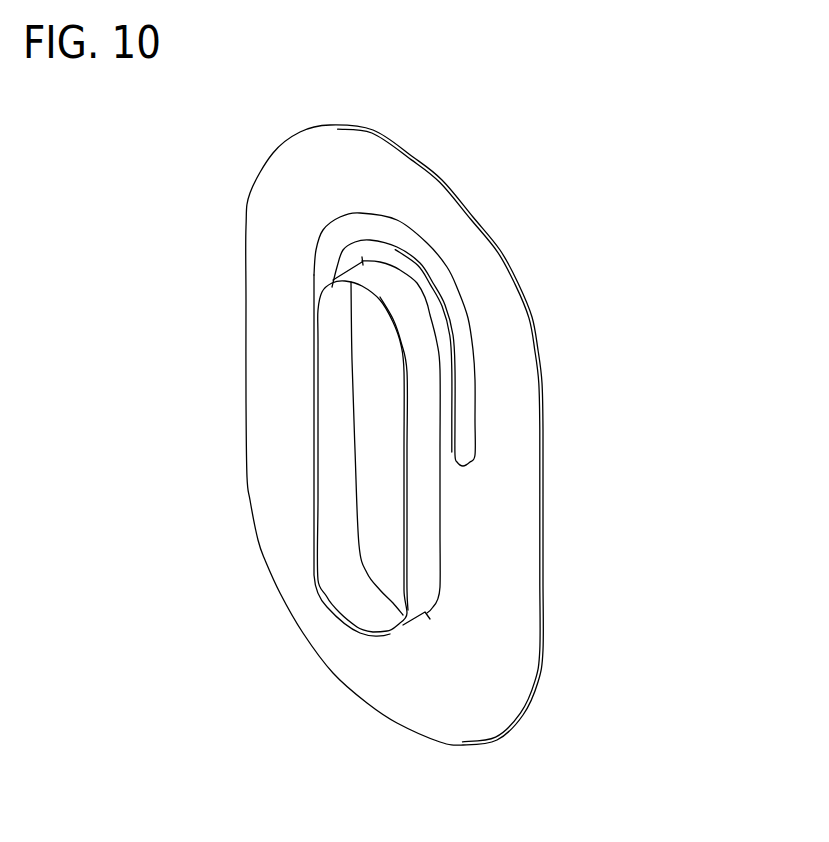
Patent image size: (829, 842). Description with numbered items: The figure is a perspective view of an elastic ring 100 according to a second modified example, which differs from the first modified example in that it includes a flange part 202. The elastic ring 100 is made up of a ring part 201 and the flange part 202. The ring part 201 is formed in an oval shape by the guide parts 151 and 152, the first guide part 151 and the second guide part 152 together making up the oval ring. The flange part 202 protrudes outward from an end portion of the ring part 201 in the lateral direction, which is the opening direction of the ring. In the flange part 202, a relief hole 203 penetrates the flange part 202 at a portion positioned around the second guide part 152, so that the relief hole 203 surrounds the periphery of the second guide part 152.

The elastic ring 100 is at (470, 197).
The flange part 202 is at (488, 284).
The relief hole 203 is at (476, 338).
The ring part 201 is at (510, 446).
The first guide part 151 is at (427, 533).
The second guide part 152 is at (422, 393).